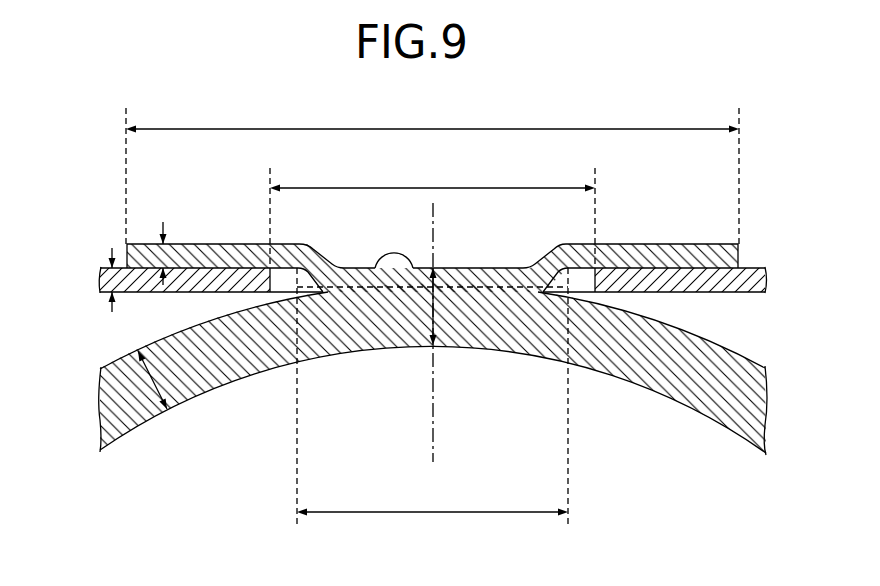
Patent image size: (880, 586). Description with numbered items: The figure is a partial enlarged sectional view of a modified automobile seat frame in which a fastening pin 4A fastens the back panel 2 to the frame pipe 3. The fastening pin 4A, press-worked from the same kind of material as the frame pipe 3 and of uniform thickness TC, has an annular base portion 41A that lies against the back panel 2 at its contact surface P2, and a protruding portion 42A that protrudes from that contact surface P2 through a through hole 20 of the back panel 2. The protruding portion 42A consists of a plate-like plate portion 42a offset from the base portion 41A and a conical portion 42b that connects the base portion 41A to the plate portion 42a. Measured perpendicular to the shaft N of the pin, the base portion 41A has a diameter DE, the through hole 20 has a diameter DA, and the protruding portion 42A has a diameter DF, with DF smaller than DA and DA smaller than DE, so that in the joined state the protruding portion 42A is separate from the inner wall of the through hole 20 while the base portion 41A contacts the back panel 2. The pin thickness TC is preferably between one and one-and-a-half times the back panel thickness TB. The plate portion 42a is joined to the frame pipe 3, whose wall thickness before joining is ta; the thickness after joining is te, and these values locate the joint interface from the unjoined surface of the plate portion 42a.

The back panel 2 is at (762, 266).
The frame pipe 3 is at (222, 376).
The fastening pin 4A is at (700, 244).
The base portion 41A is at (205, 244).
The plate portion 42a is at (376, 270).
The conical portion 42b is at (328, 263).
The protruding portion 42A is at (588, 302).
The through hole 20 is at (581, 277).
The contact surface P2 is at (668, 277).
The shaft N is at (435, 426).
The diameter of the base portion DE is at (432, 171).
The diameter of the through holes DA is at (432, 213).
The diameter of the protruding portion DF is at (432, 408).
The thickness of the fastening pin TC is at (162, 258).
The thickness of the back panel TB is at (107, 287).
The thickness after the joining te is at (437, 311).
The thickness of the frame pipe before the joining ta is at (150, 385).